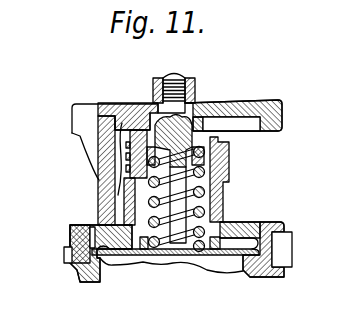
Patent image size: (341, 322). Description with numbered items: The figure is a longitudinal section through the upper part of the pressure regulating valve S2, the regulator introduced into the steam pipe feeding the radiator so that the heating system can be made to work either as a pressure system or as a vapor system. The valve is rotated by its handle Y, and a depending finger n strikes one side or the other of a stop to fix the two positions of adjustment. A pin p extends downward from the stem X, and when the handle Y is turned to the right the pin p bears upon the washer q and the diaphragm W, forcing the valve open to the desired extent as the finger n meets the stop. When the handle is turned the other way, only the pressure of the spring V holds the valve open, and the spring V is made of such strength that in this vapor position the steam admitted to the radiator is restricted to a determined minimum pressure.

The stem X is at (182, 76).
The handle Y is at (260, 102).
The depending finger n is at (100, 186).
The spring V is at (203, 220).
The pressure regulating valve S2 is at (206, 199).
The pin p is at (231, 158).
The diaphragm W is at (115, 268).
The washer q is at (163, 262).